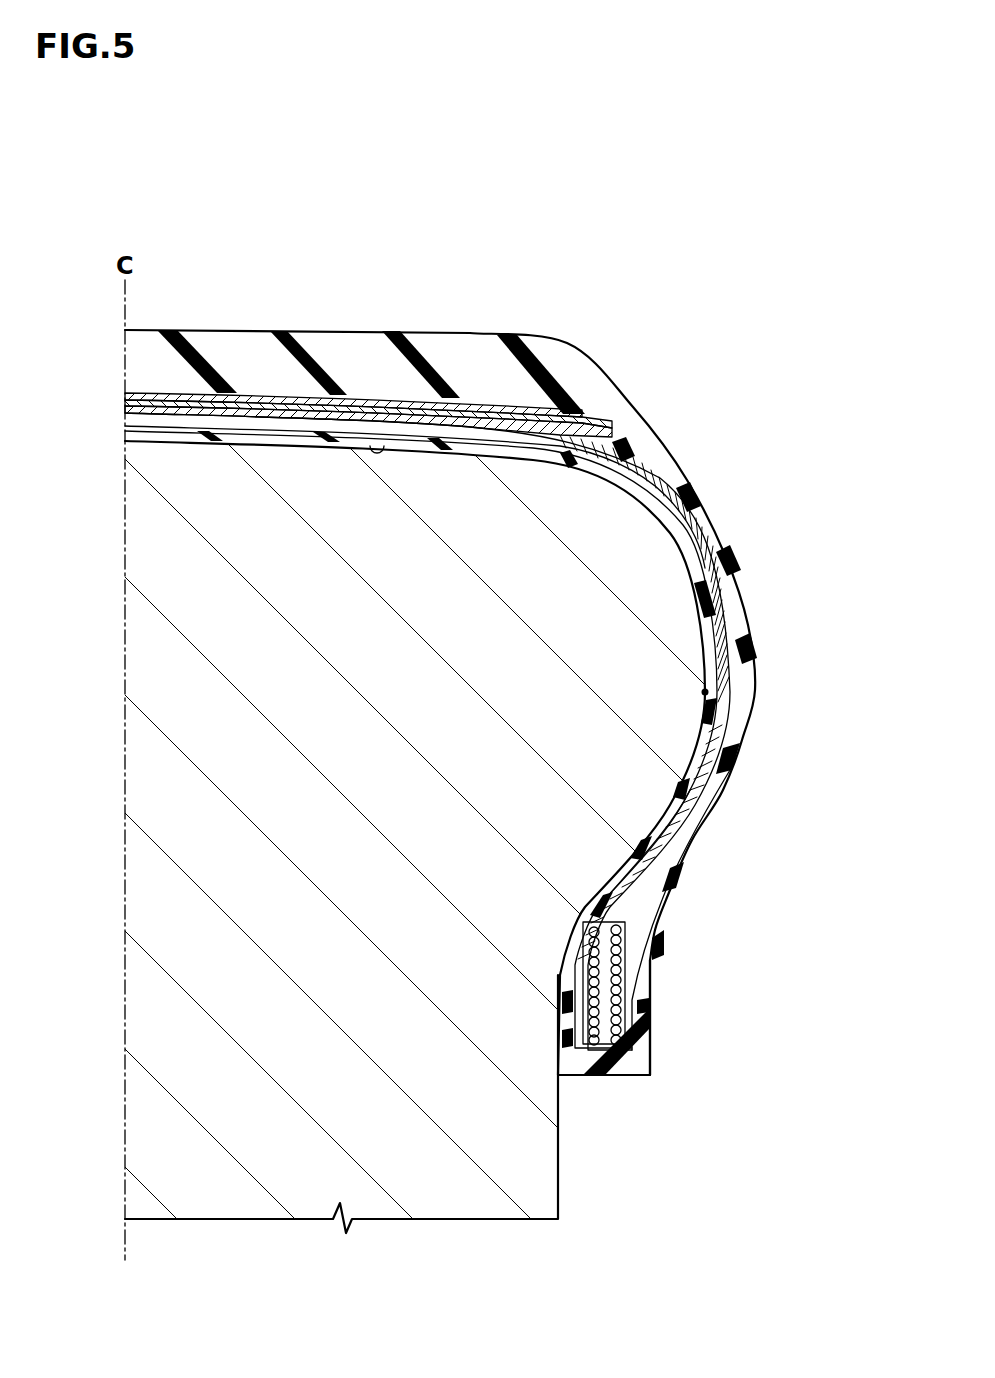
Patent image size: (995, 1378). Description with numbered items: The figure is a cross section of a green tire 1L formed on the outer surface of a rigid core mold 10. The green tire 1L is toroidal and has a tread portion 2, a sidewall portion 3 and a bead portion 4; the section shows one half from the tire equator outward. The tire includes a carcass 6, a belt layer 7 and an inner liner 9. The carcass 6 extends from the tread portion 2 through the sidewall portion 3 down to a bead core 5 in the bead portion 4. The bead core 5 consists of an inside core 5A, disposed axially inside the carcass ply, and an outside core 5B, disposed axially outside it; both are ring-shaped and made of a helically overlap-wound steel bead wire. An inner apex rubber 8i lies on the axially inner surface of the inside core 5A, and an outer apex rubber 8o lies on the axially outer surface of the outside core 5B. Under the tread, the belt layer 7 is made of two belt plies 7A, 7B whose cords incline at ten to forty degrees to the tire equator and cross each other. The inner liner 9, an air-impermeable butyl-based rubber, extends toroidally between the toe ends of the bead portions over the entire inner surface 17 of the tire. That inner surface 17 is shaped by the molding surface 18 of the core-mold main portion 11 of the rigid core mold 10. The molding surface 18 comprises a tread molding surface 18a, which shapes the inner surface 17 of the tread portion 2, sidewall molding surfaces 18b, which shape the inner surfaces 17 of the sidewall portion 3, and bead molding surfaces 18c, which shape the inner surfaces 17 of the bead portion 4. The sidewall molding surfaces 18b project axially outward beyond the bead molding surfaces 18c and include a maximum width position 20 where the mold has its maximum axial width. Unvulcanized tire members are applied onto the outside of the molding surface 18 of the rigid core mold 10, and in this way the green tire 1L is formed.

The green tire 1L is at (620, 347).
The tread portion 2 is at (450, 232).
The sidewall portion 3 is at (786, 665).
The bead portion 4 is at (668, 1048).
The bead core 5 is at (683, 983).
The inside core 5A is at (610, 928).
The outside core 5B is at (622, 978).
The carcass 6 is at (725, 637).
The belt layer 7 is at (368, 325).
The inner belt ply 7A is at (243, 406).
The outer belt ply 7B is at (282, 400).
The outer apex rubber 8o is at (640, 876).
The inner apex rubber 8i is at (605, 893).
The inner liner 9 is at (700, 740).
The rigid core mold 10 is at (186, 663).
The core-mold main portion 11 is at (212, 862).
The inner surface 17 is at (377, 444).
The molding surface 18 is at (488, 692).
The tread molding surface 18a is at (165, 438).
The sidewall molding surface 18b is at (691, 760).
The bead molding surface 18c is at (568, 1040).
The maximum width position 20 is at (708, 692).